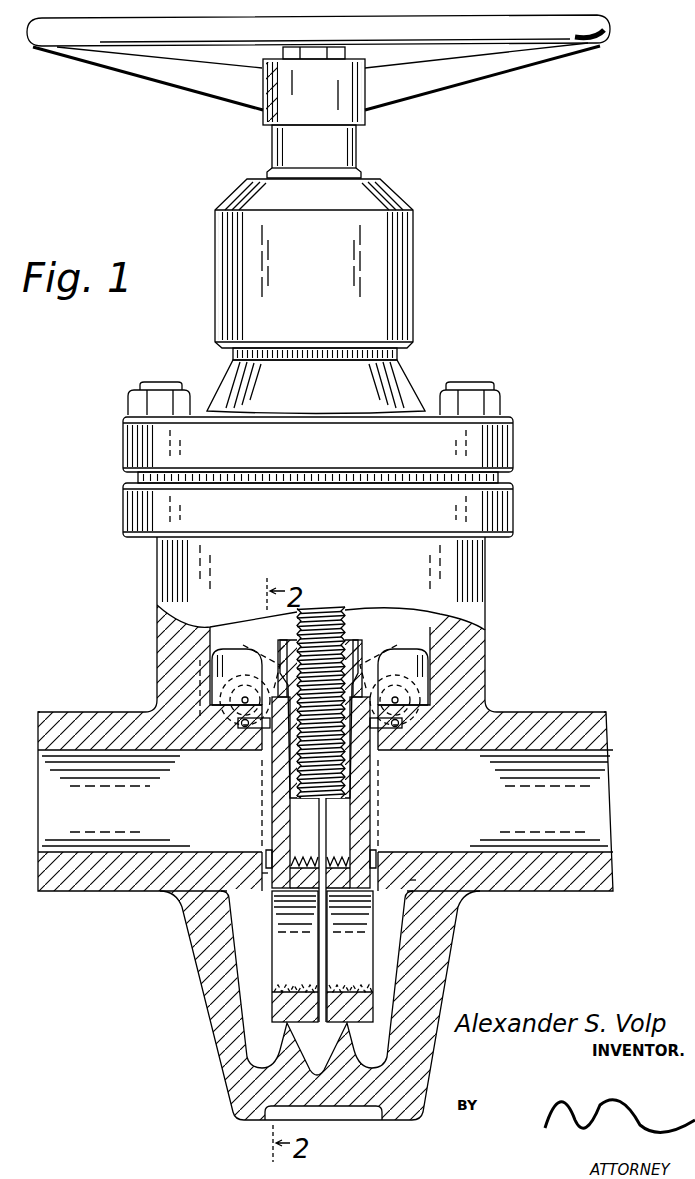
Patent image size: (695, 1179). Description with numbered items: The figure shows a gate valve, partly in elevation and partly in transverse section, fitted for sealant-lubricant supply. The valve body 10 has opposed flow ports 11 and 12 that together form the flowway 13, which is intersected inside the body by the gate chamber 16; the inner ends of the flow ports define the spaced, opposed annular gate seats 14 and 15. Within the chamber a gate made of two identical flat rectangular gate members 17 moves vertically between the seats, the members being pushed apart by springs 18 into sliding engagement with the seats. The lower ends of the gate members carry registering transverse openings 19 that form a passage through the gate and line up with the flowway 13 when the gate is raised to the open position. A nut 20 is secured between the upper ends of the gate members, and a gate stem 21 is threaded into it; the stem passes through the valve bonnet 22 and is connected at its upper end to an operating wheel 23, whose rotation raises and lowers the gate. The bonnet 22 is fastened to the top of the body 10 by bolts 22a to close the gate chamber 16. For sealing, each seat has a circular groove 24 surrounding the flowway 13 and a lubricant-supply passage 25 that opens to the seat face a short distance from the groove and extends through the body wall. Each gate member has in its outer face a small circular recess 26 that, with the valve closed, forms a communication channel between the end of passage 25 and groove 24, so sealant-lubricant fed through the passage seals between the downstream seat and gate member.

The valve body 10 is at (472, 655).
The flow port 11 is at (70, 713).
The flow port 12 is at (572, 712).
The flowway 13 is at (614, 833).
The gate seat 14 is at (265, 876).
The gate seat 15 is at (413, 880).
The gate chamber 16 is at (484, 625).
The gate member 17 is at (276, 805).
The spring 18 is at (376, 818).
The transverse opening 19 is at (287, 901).
The nut 20 is at (360, 647).
The gate stem 21 is at (343, 624).
The valve bonnet 22 is at (410, 373).
The bolt 22a is at (128, 401).
The operating wheel 23 is at (550, 44).
The circular groove 24 is at (268, 860).
The lubricant-supply passage 25 is at (240, 753).
The circular recess 26 is at (262, 768).